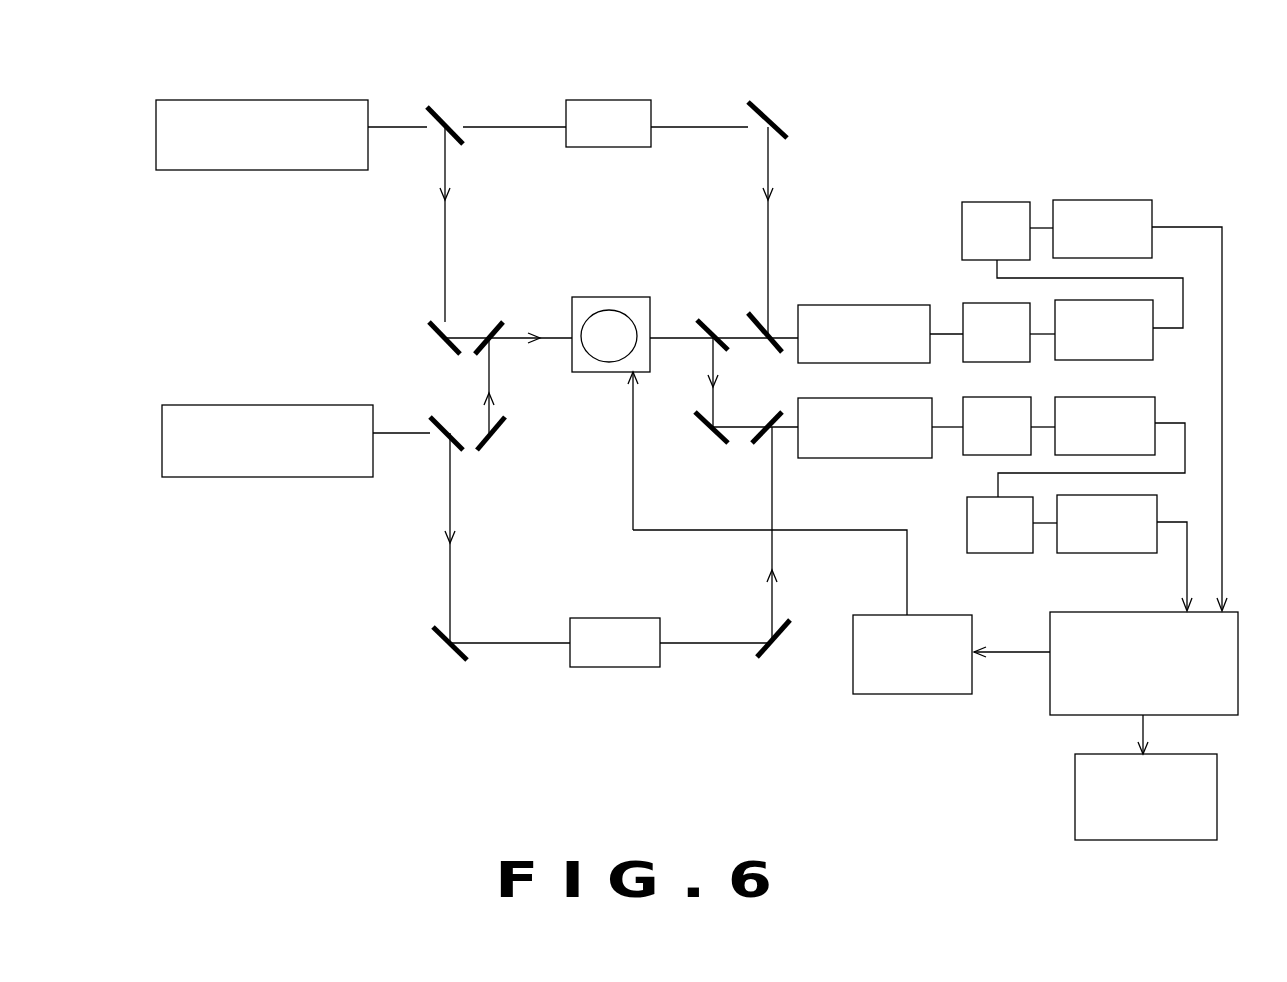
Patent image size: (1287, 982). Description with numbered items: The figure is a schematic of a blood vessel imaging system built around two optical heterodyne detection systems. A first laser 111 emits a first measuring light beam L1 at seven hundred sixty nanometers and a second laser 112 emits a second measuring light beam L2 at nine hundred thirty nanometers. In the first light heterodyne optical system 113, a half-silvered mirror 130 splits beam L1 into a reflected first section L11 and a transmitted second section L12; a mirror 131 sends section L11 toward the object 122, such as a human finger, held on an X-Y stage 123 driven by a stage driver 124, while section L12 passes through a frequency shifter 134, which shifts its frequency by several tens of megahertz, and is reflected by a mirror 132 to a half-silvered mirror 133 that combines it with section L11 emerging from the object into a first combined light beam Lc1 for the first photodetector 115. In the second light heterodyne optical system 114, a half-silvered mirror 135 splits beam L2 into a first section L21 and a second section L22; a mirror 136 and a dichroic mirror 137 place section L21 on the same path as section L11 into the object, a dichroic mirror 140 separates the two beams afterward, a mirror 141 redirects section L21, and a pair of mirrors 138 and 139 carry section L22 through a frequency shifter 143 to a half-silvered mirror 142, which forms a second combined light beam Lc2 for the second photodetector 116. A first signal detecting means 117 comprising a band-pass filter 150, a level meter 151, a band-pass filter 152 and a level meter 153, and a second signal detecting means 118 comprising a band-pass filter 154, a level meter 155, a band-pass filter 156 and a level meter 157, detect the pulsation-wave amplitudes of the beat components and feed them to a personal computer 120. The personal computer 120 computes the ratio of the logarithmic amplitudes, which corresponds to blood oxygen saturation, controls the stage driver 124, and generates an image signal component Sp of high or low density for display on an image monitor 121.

The first laser 111 is at (298, 100).
The second laser 112 is at (285, 405).
The first light heterodyne optical system 113 is at (418, 236).
The second light heterodyne optical system 114 is at (415, 555).
The first photodetector 115 is at (835, 305).
The second photodetector 116 is at (832, 458).
The first signal detecting means 117 is at (1018, 165).
The second signal detecting means 118 is at (1010, 560).
The personal computer 120 is at (1058, 715).
The image monitor 121 is at (1075, 818).
The object 122 is at (608, 315).
The X-Y stage 123 is at (590, 372).
The stage driver 124 is at (898, 694).
The half-silvered mirror 130 is at (442, 105).
The mirror 131 is at (432, 336).
The mirror 132 is at (755, 104).
The half-silvered mirror 133 is at (752, 318).
The frequency shifter 134 is at (618, 100).
The half-silvered mirror 135 is at (438, 418).
The mirror 136 is at (497, 447).
The dichroic mirror 137 is at (497, 318).
The mirror 138 is at (435, 640).
The mirror 139 is at (775, 660).
The dichroic mirror 140 is at (700, 318).
The mirror 141 is at (700, 415).
The half-silvered mirror 142 is at (757, 440).
The frequency shifter 143 is at (608, 667).
The band-pass filter 150 is at (968, 305).
The level meter 151 is at (1153, 342).
The band-pass filter 152 is at (968, 202).
The level meter 153 is at (1088, 200).
The band-pass filter 154 is at (970, 458).
The level meter 155 is at (1155, 415).
The band-pass filter 156 is at (965, 543).
The level meter 157 is at (1065, 553).
The first measuring light beam L1 is at (397, 125).
The first section of the first measuring light beam L11 is at (447, 178).
The second section of the first measuring light beam L12 is at (527, 125).
The second measuring light beam L2 is at (403, 435).
The first section of the second measuring light beam L21 is at (490, 368).
The second section of the second measuring light beam L22 is at (452, 590).
The first combined light beam Lc1 is at (785, 330).
The second combined light beam Lc2 is at (782, 412).
The image signal component Sp is at (1145, 725).